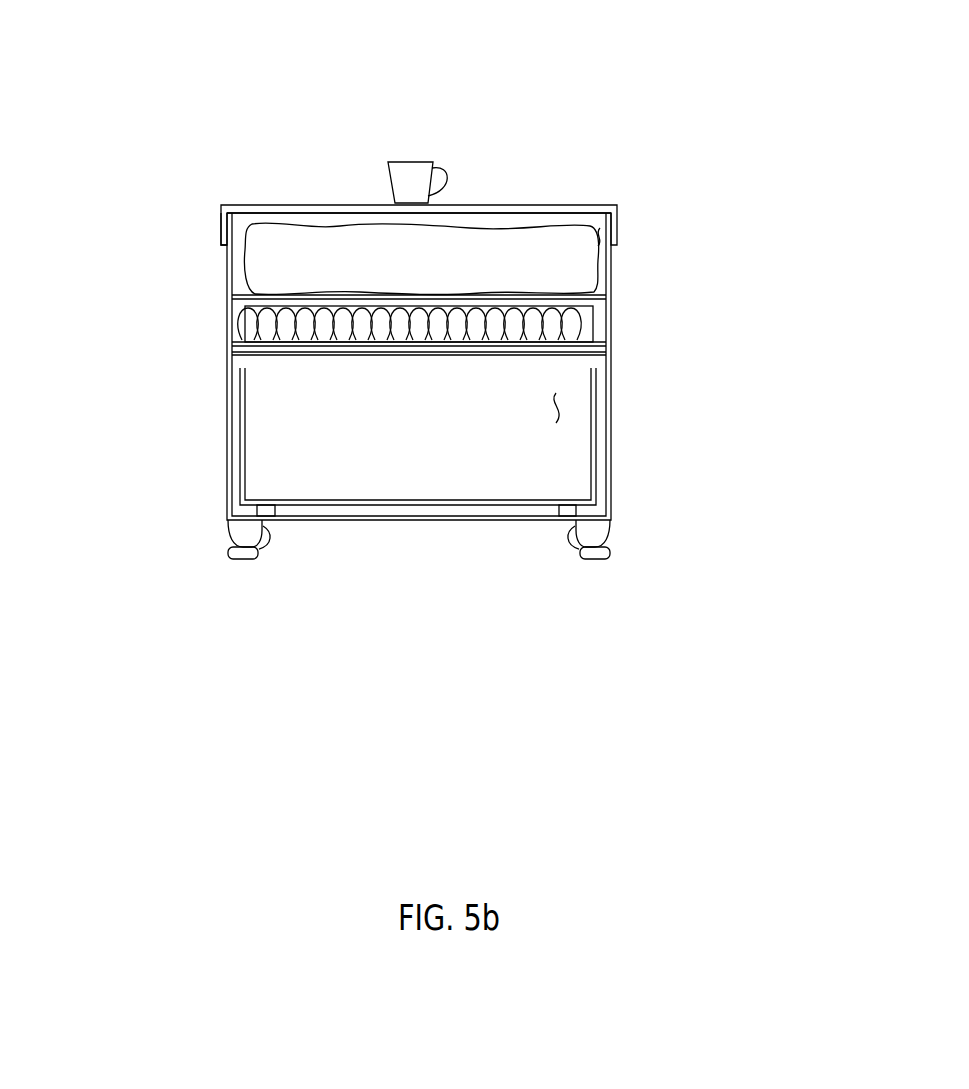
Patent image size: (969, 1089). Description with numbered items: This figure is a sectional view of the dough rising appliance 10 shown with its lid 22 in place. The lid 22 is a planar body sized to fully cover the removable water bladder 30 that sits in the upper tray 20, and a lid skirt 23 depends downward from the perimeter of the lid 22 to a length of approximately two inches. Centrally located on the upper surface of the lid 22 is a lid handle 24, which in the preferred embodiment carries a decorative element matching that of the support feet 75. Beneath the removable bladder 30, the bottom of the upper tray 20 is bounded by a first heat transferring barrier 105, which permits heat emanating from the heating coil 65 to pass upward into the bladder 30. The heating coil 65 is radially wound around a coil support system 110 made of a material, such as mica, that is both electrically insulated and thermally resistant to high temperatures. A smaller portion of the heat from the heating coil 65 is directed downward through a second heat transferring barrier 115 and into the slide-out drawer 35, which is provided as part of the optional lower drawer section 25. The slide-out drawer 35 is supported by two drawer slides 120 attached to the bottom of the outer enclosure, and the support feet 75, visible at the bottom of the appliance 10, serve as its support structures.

The dough rising appliance 10 is at (222, 636).
The upper tray 20 is at (600, 238).
The lid 22 is at (551, 205).
The lid skirt 23 is at (220, 218).
The lid handle 24 is at (423, 162).
The lower drawer section 25 is at (557, 405).
The removable bladder 30 is at (572, 211).
The slide-out drawer 35 is at (243, 432).
The heating coil 65 is at (240, 304).
The support feet 75 is at (240, 535).
The first heat transferring barrier 105 is at (357, 302).
The coil support system 110 is at (600, 318).
The second heat transferring barrier 115 is at (315, 345).
The drawer slides 120 is at (276, 513).